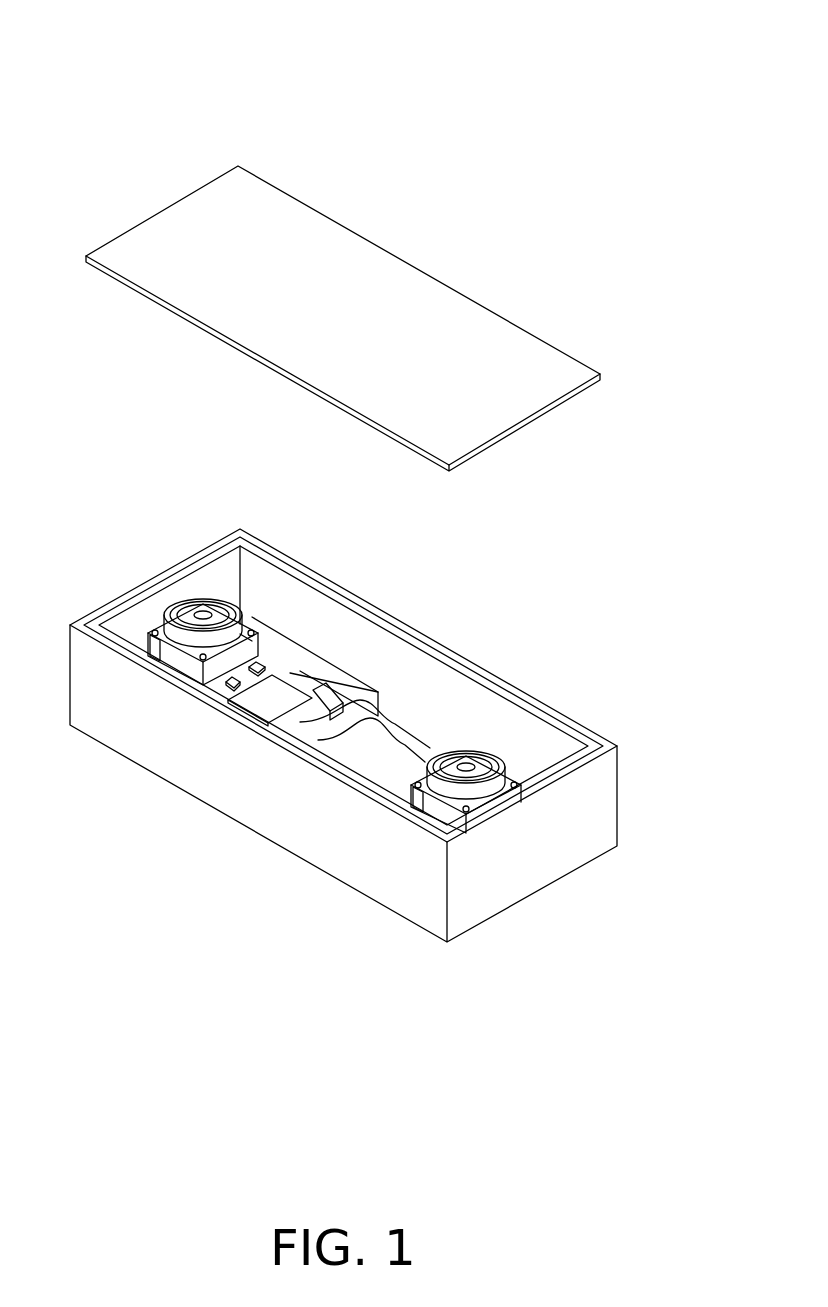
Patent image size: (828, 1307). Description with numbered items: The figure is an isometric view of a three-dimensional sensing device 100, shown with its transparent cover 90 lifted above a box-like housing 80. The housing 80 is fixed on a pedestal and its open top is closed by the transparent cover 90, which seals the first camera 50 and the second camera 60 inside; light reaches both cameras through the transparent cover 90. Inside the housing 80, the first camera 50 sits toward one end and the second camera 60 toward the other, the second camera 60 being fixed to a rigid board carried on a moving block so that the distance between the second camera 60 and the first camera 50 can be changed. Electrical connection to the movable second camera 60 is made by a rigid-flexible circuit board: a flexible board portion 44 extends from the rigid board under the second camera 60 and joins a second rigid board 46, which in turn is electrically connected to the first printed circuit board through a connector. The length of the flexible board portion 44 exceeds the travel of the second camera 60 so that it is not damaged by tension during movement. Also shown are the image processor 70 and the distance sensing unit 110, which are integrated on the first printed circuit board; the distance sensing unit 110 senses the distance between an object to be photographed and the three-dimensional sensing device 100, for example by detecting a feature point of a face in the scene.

The three-dimensional sensing device 100 is at (140, 42).
The transparent cover 90 is at (432, 293).
The housing 80 is at (583, 820).
The image processor 70 is at (203, 690).
The first camera 50 is at (200, 607).
The second camera 60 is at (466, 762).
The distance sensing unit 110 is at (282, 685).
The second rigid board 46 is at (293, 638).
The flexible board portion 44 is at (373, 740).